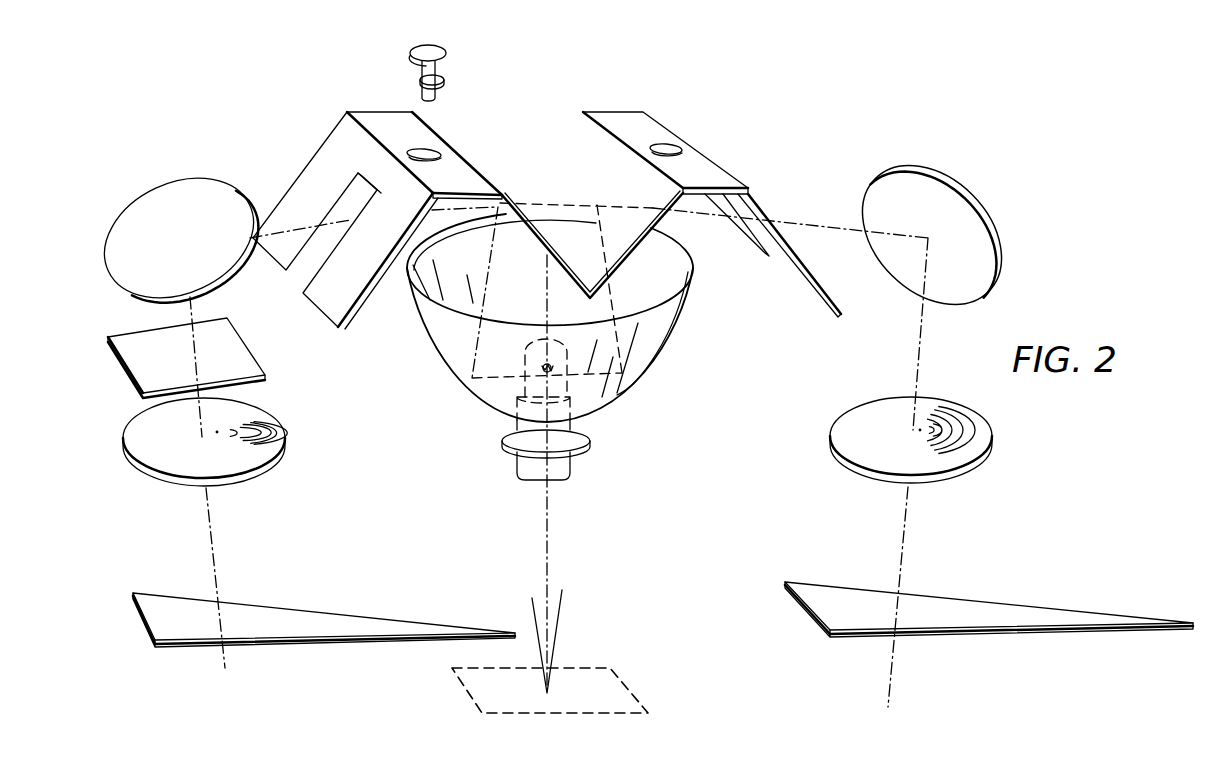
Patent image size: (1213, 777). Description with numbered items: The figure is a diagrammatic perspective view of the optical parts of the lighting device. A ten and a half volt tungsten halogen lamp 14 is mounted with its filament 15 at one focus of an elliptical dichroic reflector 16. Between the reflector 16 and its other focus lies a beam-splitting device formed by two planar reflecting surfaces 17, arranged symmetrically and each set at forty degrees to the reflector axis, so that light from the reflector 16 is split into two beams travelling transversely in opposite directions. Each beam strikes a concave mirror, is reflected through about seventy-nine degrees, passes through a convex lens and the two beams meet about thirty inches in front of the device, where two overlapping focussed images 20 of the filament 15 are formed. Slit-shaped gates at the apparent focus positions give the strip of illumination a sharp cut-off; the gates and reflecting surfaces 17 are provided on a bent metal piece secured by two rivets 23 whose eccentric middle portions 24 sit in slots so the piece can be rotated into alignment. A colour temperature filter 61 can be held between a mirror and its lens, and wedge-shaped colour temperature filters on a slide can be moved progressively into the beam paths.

The tungsten halogen lamp 14 is at (515, 407).
The filament 15 is at (524, 363).
The elliptical dichroic reflector 16 is at (662, 342).
The planar reflecting surfaces 17 is at (517, 220).
The overlapping focussed images 20 is at (592, 675).
The rivets 23 is at (445, 56).
The eccentric middle portions 24 is at (445, 79).
The filter 61 is at (143, 367).